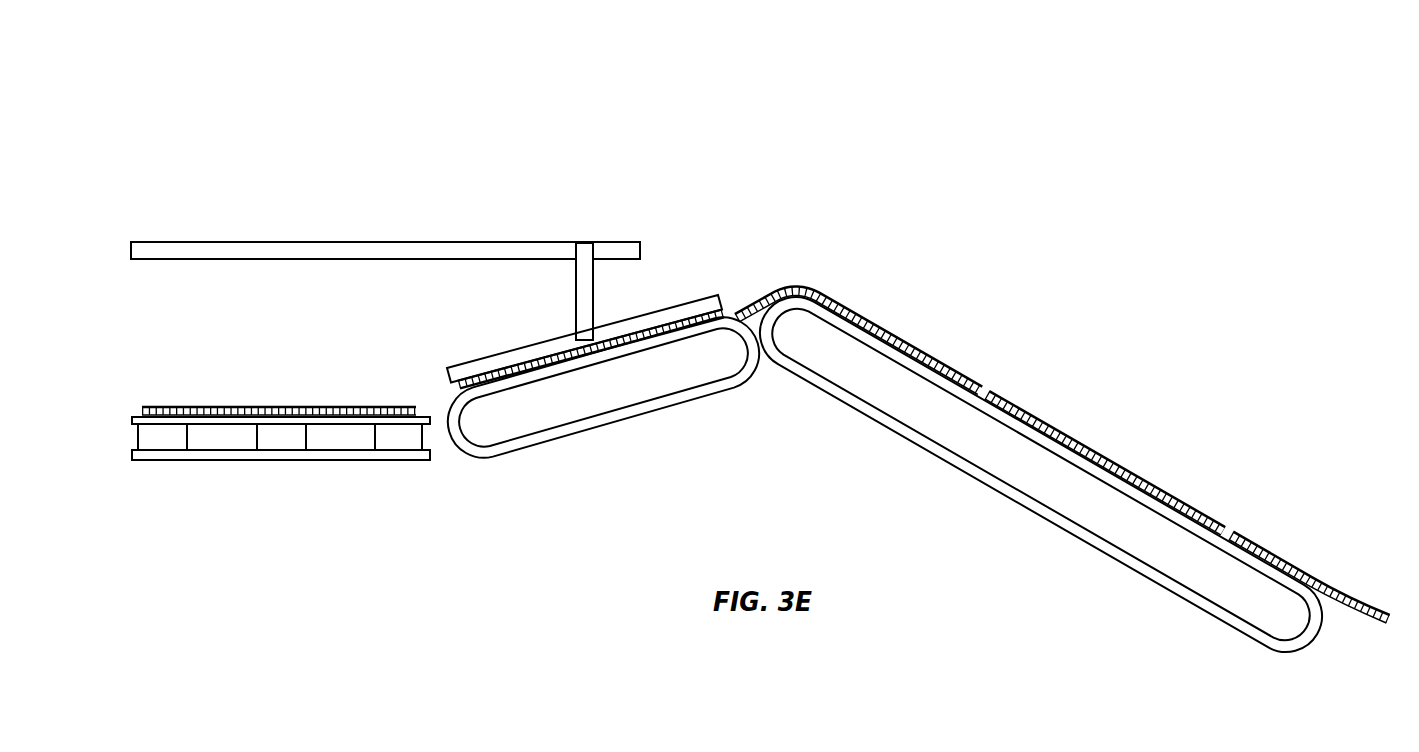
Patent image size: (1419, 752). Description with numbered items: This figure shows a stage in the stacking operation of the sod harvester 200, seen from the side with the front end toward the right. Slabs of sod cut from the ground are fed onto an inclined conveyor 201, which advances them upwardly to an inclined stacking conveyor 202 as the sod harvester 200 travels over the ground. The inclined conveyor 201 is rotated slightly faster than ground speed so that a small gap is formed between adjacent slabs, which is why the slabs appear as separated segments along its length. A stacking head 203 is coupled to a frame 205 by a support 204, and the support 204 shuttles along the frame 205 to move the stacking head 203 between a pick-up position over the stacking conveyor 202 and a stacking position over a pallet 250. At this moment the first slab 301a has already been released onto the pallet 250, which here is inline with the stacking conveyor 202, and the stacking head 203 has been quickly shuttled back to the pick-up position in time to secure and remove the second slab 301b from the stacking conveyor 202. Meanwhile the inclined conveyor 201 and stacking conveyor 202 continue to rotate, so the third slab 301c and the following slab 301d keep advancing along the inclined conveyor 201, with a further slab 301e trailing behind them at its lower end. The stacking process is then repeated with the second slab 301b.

The sod harvester 200 is at (780, 55).
The inclined conveyor 201 is at (935, 455).
The stacking conveyor 202 is at (612, 427).
The stacking head 203 is at (446, 368).
The support 204 is at (594, 280).
The frame 205 is at (245, 243).
The pallet 250 is at (283, 460).
The first slab 301a is at (160, 405).
The second slab 301b is at (654, 333).
The third slab 301c is at (933, 358).
The slab 301d is at (1090, 448).
The fifth flexible display segment 301e is at (1318, 578).